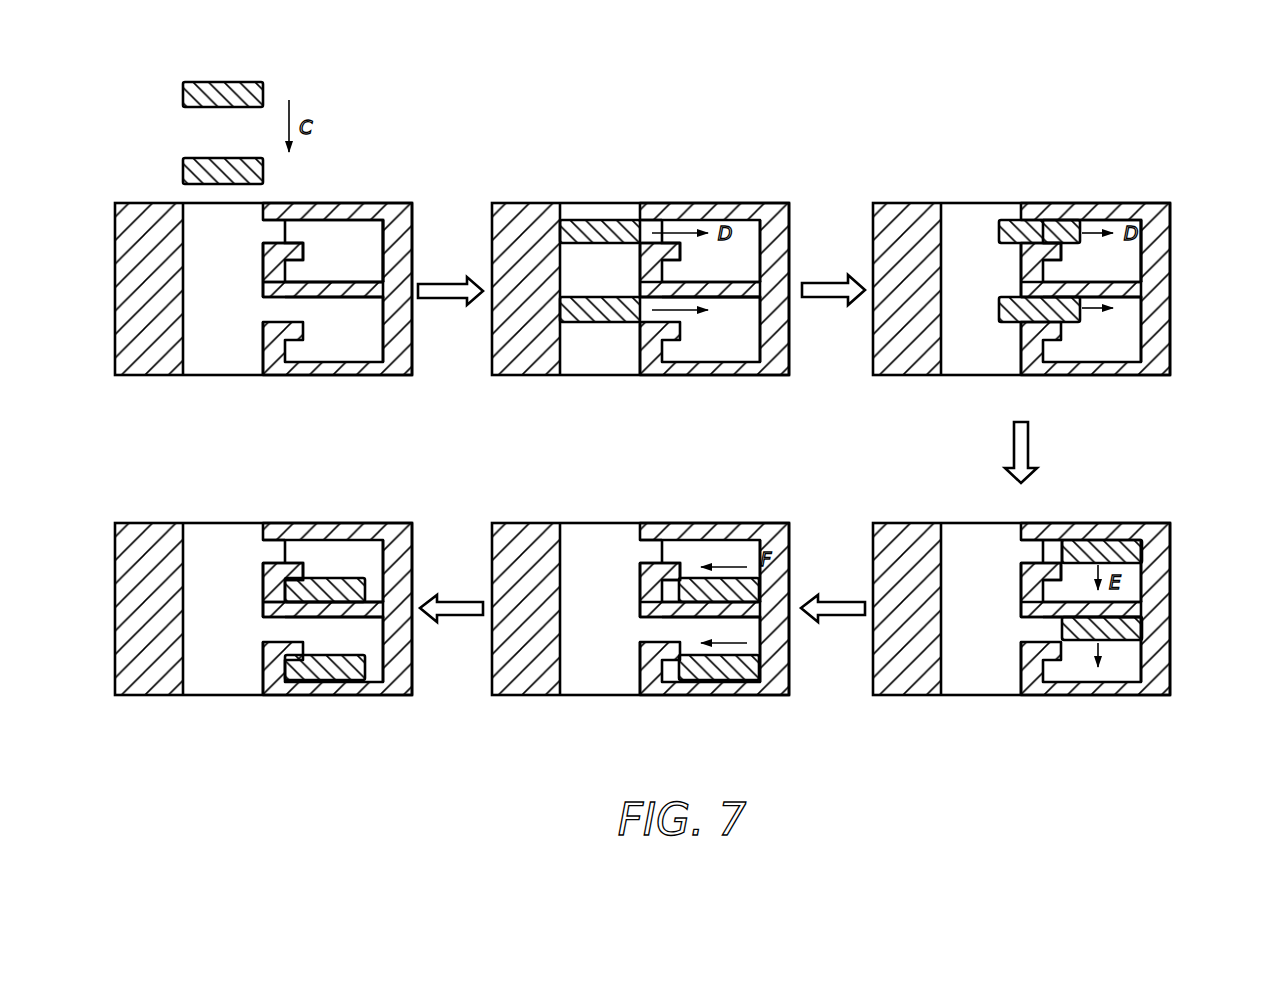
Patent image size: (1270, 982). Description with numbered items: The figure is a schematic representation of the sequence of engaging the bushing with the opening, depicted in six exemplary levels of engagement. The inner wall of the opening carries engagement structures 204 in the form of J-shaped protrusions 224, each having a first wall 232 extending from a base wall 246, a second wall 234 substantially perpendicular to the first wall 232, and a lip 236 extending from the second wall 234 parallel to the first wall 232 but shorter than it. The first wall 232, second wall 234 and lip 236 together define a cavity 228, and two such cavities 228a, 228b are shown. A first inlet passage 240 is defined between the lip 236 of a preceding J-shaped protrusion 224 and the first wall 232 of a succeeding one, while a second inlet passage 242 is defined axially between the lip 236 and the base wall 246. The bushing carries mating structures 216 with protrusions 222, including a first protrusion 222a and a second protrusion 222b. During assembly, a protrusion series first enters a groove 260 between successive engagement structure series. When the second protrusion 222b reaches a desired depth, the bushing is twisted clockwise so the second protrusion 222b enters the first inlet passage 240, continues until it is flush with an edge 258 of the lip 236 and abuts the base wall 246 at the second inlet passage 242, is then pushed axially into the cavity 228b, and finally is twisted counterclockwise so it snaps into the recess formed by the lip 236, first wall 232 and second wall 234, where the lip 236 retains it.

The engagement structure 204 is at (285, 201).
The mating structure 216 is at (642, 392).
The protrusion 222 is at (642, 392).
The first protrusion 222a is at (183, 88).
The second protrusion 222b is at (183, 168).
The J-shaped protrusion 224 is at (358, 300).
The cavity 228 is at (706, 347).
The first cavity 228a is at (364, 265).
The second cavity 228b is at (327, 347).
The first wall 232 is at (360, 247).
The second wall 234 is at (263, 337).
The lip 236 is at (305, 252).
The first inlet passage 240 is at (281, 228).
The second inlet passage 242 is at (400, 245).
The base wall 246 is at (128, 376).
The edge of the lip 258 is at (332, 282).
The groove 260 is at (205, 376).